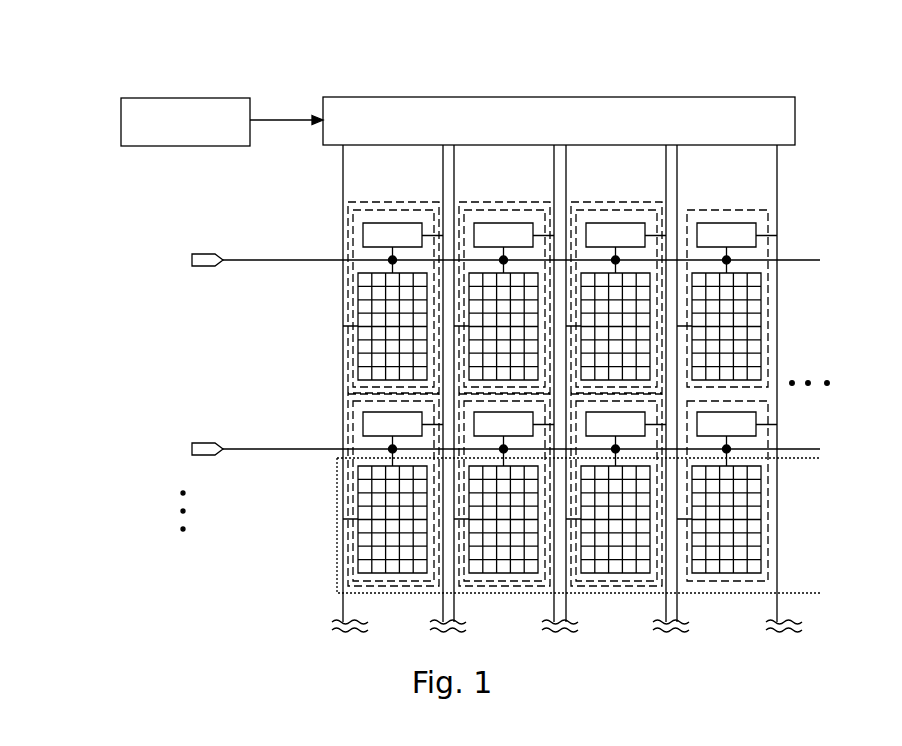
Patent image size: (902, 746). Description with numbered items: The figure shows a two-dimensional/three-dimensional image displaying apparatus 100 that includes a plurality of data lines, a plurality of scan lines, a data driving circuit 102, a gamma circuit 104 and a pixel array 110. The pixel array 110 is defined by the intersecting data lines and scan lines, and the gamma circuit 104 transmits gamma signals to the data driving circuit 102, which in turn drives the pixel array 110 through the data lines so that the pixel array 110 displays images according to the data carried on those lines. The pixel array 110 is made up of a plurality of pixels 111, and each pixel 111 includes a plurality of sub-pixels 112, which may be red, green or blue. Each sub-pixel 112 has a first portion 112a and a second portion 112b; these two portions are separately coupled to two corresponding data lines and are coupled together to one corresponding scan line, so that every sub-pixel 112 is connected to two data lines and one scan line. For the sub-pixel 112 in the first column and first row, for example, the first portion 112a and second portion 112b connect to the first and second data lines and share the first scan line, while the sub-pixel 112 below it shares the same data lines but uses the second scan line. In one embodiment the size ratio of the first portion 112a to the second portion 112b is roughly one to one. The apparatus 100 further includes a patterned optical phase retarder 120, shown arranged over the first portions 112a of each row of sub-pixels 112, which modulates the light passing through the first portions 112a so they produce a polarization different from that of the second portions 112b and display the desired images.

The 2D/3D image displaying apparatus 100 is at (31, 88).
The data driving circuit 102 is at (797, 120).
The gamma circuit 104 is at (121, 120).
The pixel array 110 is at (835, 193).
The pixel 111 is at (349, 202).
The sub-pixel 112 is at (398, 587).
The first portion 112a is at (358, 375).
The second portion 112b is at (363, 235).
The patterned optical phase retarder 120 is at (807, 598).